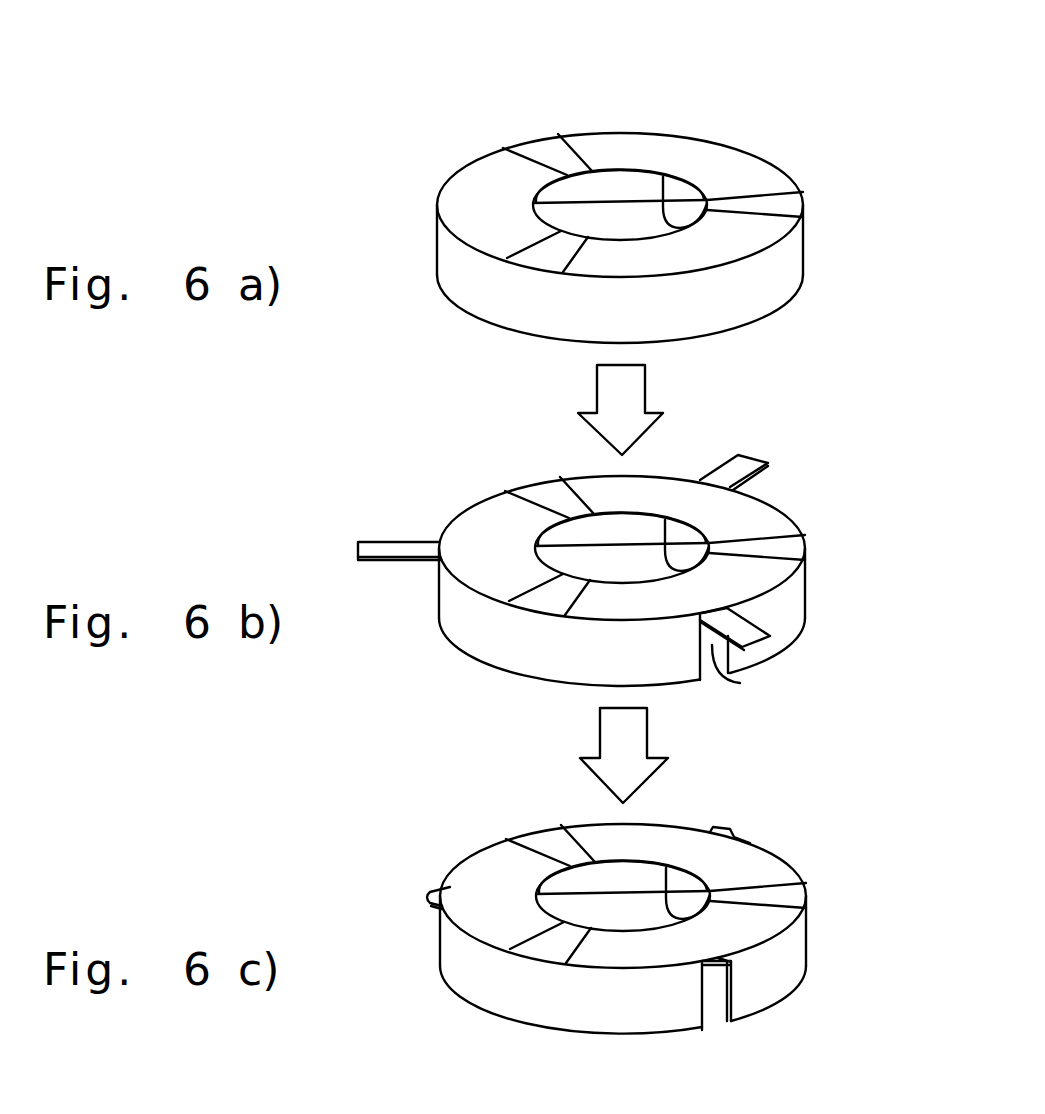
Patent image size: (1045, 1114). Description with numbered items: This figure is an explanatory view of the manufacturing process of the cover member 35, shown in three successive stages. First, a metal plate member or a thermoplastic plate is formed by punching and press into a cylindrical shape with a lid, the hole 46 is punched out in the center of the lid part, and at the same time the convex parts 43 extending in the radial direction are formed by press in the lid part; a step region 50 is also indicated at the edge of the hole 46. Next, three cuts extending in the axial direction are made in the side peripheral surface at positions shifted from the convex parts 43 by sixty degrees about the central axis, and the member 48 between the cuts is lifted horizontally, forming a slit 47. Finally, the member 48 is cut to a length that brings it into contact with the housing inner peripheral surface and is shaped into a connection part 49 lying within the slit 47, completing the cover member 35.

The convex parts 43 is at (758, 200).
The hole 46 is at (618, 187).
The step portion of hole 50 is at (655, 237).
The member 48 is at (732, 620).
The slit 47 is at (735, 683).
The cover member 35 is at (772, 825).
The connection part 49 is at (730, 1020).